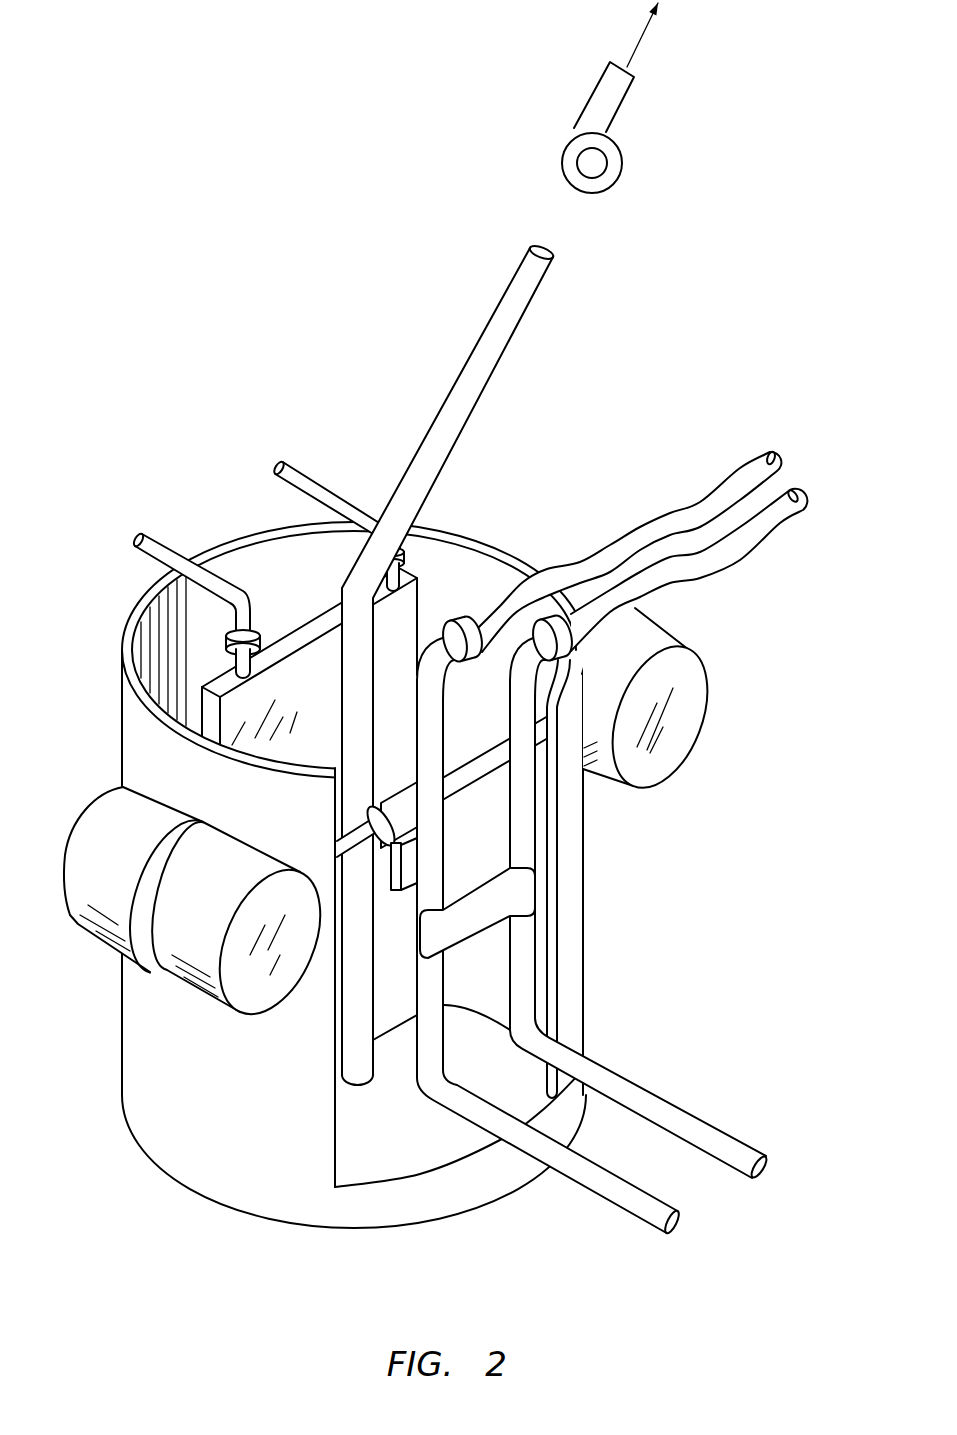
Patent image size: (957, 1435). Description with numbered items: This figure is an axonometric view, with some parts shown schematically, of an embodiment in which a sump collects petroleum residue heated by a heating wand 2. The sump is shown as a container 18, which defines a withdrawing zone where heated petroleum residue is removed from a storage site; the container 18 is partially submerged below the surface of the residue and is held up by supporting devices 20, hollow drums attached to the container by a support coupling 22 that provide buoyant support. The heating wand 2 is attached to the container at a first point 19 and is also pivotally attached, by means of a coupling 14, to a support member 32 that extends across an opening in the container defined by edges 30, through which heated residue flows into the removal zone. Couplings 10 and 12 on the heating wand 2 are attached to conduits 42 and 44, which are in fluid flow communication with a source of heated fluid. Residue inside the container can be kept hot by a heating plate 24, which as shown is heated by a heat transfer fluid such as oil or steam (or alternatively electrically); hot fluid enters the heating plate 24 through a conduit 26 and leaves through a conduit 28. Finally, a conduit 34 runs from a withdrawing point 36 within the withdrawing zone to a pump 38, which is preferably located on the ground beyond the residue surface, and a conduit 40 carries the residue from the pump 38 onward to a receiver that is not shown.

The heating wand 2 is at (748, 1130).
The coupling 10 is at (480, 661).
The coupling 12 is at (575, 630).
The coupling 14 is at (465, 868).
The container 18 is at (487, 543).
The first point 19 is at (393, 850).
The supporting devices 20 is at (100, 808).
The support coupling 22 is at (132, 885).
The heating plate 24 is at (419, 600).
The conduit 26 is at (80, 505).
The conduit 28 is at (218, 434).
The edges 30 is at (558, 922).
The support member 32 is at (467, 763).
The conduit 34 is at (580, 188).
The withdrawing point 36 is at (357, 1090).
The pump 38 is at (570, 132).
The conduit 40 is at (637, 43).
The conduit 42 is at (835, 422).
The conduit 44 is at (857, 462).